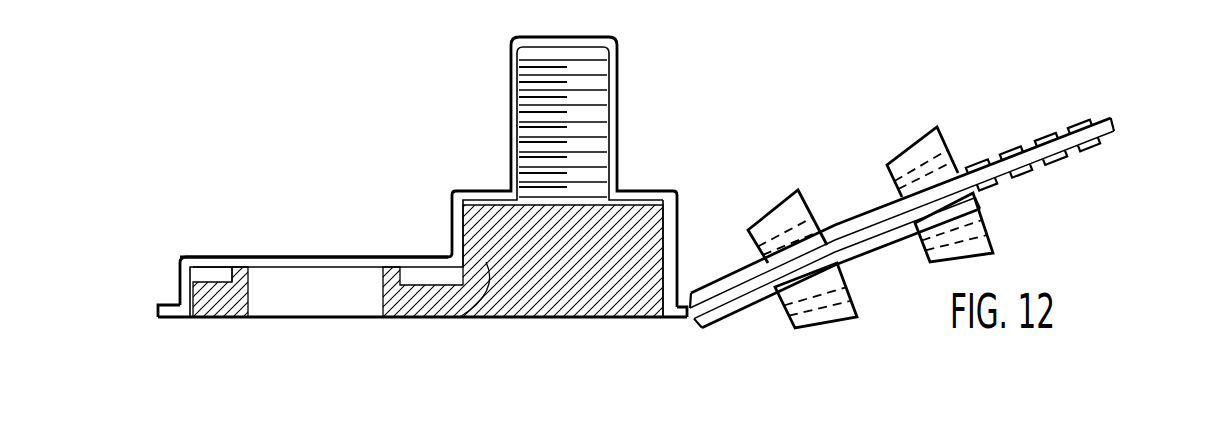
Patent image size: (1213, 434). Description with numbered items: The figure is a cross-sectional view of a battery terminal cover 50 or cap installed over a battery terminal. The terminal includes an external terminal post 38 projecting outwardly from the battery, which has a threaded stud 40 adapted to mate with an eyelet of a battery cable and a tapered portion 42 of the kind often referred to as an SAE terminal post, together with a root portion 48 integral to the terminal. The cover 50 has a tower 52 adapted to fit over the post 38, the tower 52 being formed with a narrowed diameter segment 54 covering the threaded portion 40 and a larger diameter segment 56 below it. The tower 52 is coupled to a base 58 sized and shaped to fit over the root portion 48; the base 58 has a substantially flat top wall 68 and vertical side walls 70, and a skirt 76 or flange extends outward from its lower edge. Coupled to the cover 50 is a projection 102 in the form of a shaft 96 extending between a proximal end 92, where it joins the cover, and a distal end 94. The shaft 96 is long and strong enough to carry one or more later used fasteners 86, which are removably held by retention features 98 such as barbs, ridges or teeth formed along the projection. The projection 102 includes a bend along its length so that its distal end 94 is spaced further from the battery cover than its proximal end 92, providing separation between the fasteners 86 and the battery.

The external terminal post 38 is at (490, 201).
The threaded stud 40 is at (597, 72).
The tapered portion 42 is at (464, 318).
The root portion 48 is at (225, 317).
The battery terminal cover 50 is at (426, 212).
The tower 52 is at (655, 150).
The narrowed diameter segment 54 is at (511, 68).
The larger diameter segment 56 is at (677, 230).
The base 58 is at (222, 256).
The top wall 68 is at (328, 257).
The vertical side walls 70 is at (179, 288).
The skirt 76 is at (169, 310).
The fastener 86 is at (790, 207).
The proximal end 92 is at (688, 320).
The distal end 94 is at (1113, 120).
The shaft 96 is at (878, 233).
The retention features 98 is at (1082, 117).
The projection 102 is at (938, 177).